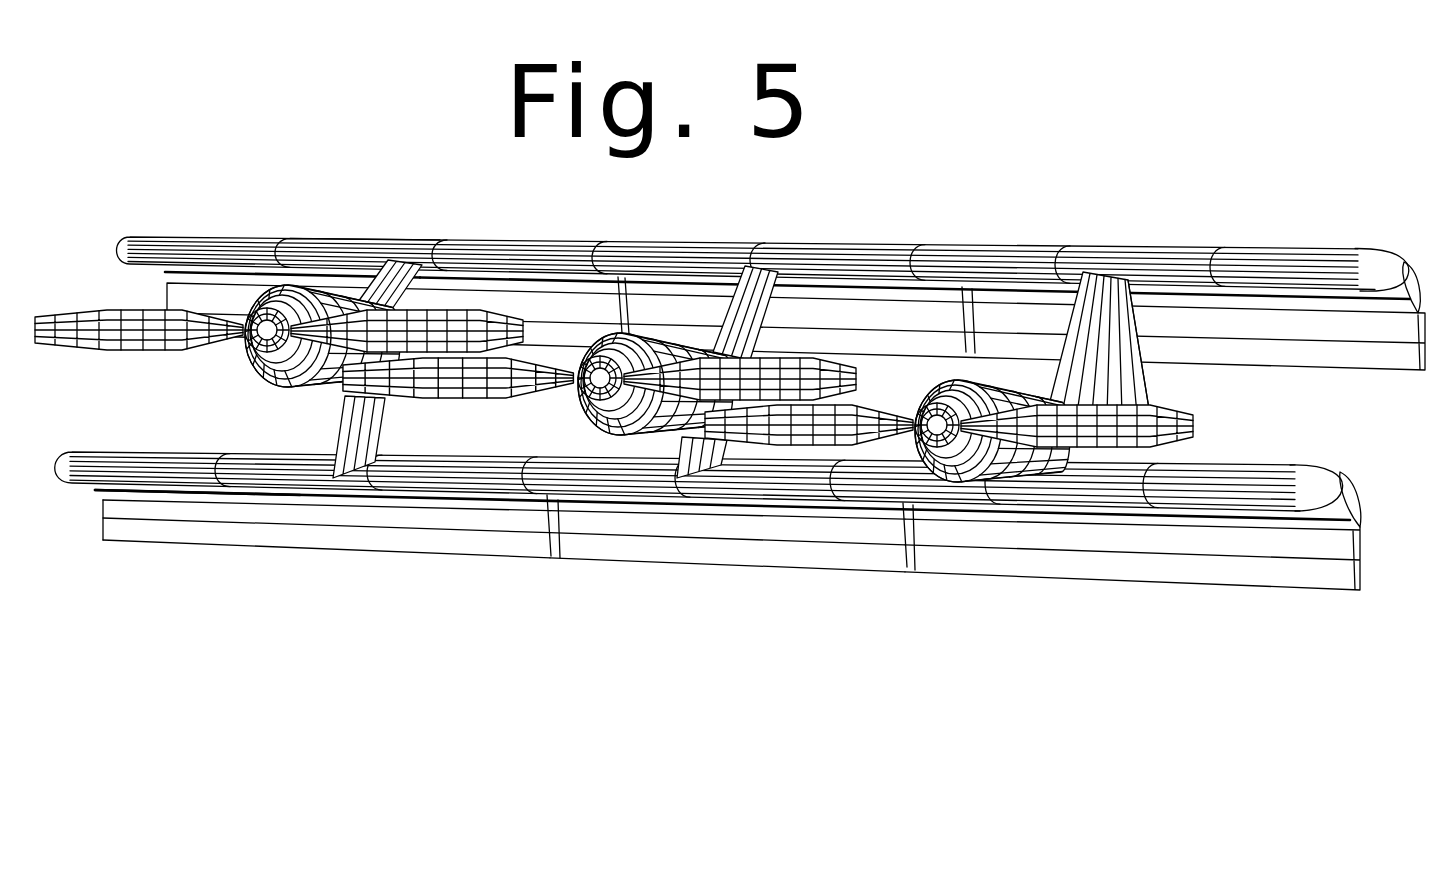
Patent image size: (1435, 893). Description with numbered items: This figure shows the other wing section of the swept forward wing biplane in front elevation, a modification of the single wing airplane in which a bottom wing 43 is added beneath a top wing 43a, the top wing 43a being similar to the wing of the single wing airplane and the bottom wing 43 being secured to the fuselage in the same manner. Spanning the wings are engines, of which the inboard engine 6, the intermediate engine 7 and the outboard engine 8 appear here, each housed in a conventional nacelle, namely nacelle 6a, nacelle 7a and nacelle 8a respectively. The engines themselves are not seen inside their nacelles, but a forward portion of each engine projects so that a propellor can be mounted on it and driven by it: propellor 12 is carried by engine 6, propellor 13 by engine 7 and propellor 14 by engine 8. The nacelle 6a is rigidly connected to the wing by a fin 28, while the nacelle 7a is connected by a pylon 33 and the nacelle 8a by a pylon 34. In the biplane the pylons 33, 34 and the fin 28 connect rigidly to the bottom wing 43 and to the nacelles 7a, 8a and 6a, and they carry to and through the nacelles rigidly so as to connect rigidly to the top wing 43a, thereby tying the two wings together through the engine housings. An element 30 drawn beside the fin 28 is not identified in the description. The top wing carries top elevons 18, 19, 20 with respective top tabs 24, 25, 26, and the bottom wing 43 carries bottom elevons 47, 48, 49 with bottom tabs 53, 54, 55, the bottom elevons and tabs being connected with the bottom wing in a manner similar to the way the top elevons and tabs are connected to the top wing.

The engine 6 is at (927, 408).
The nacelle 6a is at (997, 381).
The engine 7 is at (590, 352).
The nacelle 7a is at (593, 415).
The engine 8 is at (253, 353).
The nacelle 8a is at (324, 387).
The propellor 12 is at (1190, 422).
The propellor 13 is at (470, 388).
The propellor 14 is at (160, 347).
The top elevon 18 is at (1416, 290).
The top elevon 19 is at (833, 280).
The top elevon 20 is at (160, 277).
The top tab 24 is at (1318, 348).
The top tab 25 is at (910, 320).
The top tab 26 is at (185, 297).
The fin 28 is at (1088, 320).
The strut edge member 30 is at (1135, 390).
The pylon 33 is at (680, 449).
The pylon 34 is at (347, 443).
The bottom wing 43 is at (157, 460).
The top wing 43a is at (245, 245).
The bottom elevon 47 is at (1360, 505).
The bottom elevon 48 is at (777, 507).
The bottom elevon 49 is at (95, 493).
The bottom tab 53 is at (1037, 578).
The bottom tab 54 is at (657, 563).
The bottom tab 55 is at (235, 548).